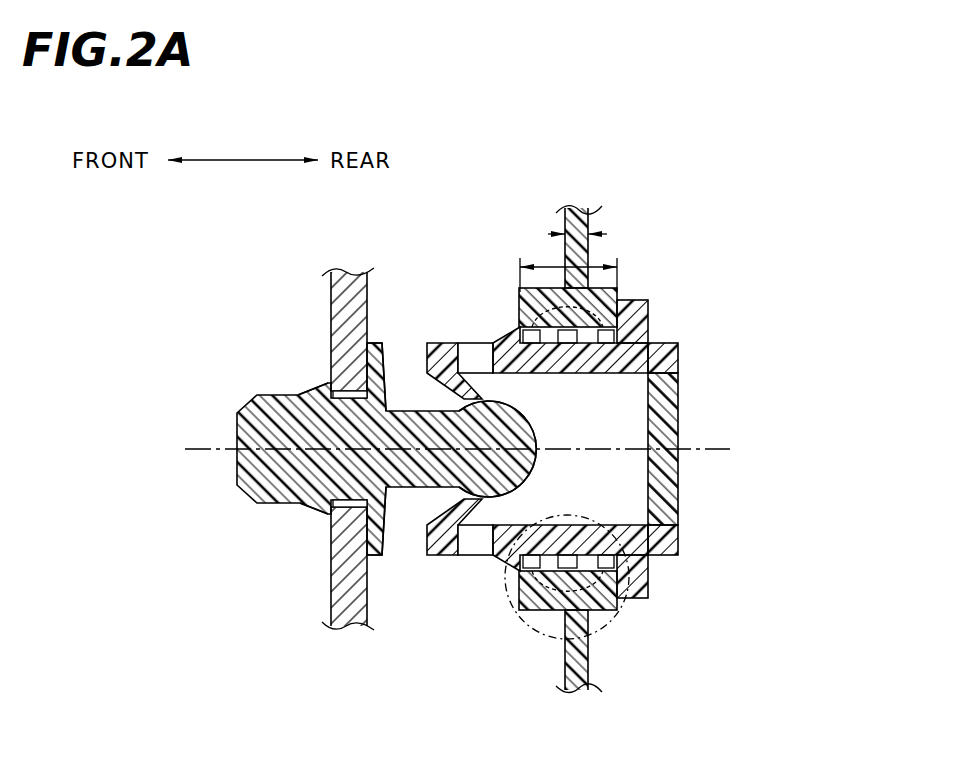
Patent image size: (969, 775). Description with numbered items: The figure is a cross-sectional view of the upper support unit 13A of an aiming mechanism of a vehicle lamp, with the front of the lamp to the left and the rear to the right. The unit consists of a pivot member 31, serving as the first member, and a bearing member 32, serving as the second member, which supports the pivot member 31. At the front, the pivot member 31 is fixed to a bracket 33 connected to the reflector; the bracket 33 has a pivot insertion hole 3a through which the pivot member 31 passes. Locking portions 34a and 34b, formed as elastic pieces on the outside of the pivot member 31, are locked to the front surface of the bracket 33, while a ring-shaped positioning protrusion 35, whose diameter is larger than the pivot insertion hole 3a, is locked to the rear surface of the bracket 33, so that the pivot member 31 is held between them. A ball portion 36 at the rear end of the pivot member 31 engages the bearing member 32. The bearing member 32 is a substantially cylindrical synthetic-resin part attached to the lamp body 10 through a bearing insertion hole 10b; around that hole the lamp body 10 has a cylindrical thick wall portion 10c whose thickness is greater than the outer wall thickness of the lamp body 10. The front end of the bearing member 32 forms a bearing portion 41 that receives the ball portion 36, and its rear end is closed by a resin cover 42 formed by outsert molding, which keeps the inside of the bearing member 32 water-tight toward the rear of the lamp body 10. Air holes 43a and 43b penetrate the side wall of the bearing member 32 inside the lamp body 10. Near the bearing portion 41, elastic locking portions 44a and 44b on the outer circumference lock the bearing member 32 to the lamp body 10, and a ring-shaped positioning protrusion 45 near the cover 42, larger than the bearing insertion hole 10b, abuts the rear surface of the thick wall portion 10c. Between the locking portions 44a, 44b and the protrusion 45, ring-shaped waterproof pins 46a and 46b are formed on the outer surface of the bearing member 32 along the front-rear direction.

The ball joint 13A is at (575, 399).
The lamp body 10 is at (578, 218).
The bearing insertion hole 10b is at (525, 310).
The thick wall portion 10c is at (620, 296).
The pivot member 31 is at (282, 417).
The locking portion 34b is at (320, 392).
The locking portion 34a is at (327, 512).
The pivot insertion hole 3a is at (333, 525).
The bracket 33 is at (378, 550).
The positioning protrusion 35 is at (345, 580).
The ball portion 36 is at (513, 430).
The bearing portion 41 is at (432, 513).
The air hole 43b is at (478, 355).
The air hole 43a is at (473, 545).
The locking portion 44b is at (510, 330).
The locking portion 44a is at (518, 563).
The bearing member 32 is at (678, 348).
The cover 42 is at (668, 485).
The positioning protrusion 45 is at (642, 582).
The waterproof pin 46a is at (557, 568).
The waterproof pin 46b is at (622, 592).